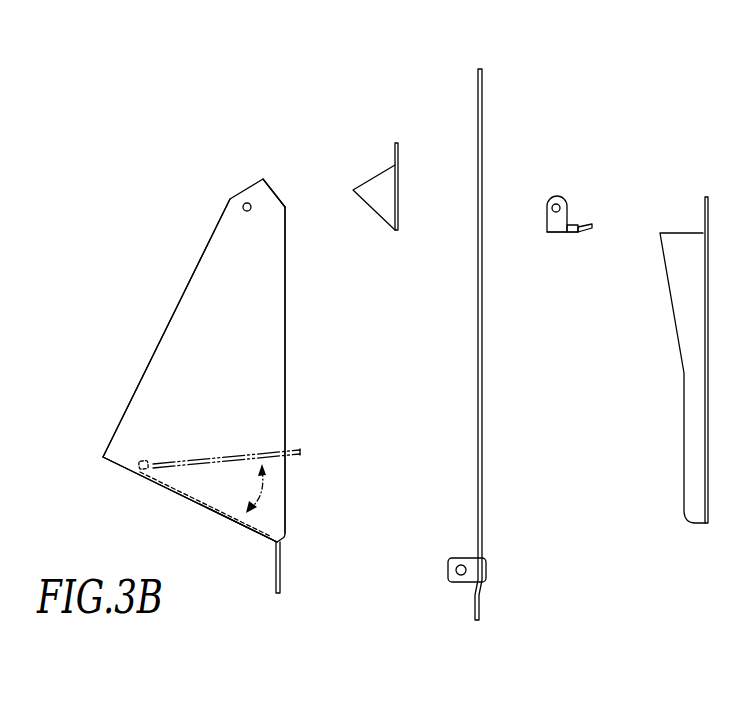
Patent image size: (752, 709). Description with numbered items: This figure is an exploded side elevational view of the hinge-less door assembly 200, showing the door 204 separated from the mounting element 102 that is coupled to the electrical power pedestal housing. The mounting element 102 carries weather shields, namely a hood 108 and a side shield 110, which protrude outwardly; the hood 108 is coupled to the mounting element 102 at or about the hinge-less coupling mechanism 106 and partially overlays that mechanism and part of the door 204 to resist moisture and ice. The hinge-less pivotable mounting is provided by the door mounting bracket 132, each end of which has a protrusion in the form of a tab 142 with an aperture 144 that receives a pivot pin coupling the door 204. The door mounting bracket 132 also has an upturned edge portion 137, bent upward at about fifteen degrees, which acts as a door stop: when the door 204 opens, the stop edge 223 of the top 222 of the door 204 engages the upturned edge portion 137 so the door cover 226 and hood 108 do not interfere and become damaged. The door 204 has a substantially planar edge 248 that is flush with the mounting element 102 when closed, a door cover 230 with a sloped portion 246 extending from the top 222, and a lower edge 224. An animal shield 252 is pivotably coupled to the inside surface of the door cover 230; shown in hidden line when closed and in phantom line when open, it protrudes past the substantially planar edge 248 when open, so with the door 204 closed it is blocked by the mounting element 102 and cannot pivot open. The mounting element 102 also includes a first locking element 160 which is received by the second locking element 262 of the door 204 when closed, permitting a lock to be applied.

The door assembly 200 is at (720, 50).
The mounting element 102 is at (492, 80).
The hood 108 is at (383, 178).
The side shield 110 is at (685, 240).
The hinge-less coupling mechanism 106 is at (582, 198).
The aperture 144 is at (560, 200).
The tab 142 is at (548, 218).
The upturned edge portion 137 is at (587, 223).
The door mounting bracket 132 is at (578, 233).
The first locking element 160 is at (472, 560).
The top 222 is at (236, 174).
The stop edge 223 is at (277, 192).
The upper edge 246 is at (205, 258).
The substantially planar edge 248 is at (288, 277).
The door cover 230 is at (172, 317).
The door cover 226 is at (217, 387).
The animal shield 252 is at (298, 442).
The bottom edge 224 is at (192, 522).
The second locking element 262 is at (281, 558).
The door 204 is at (262, 555).